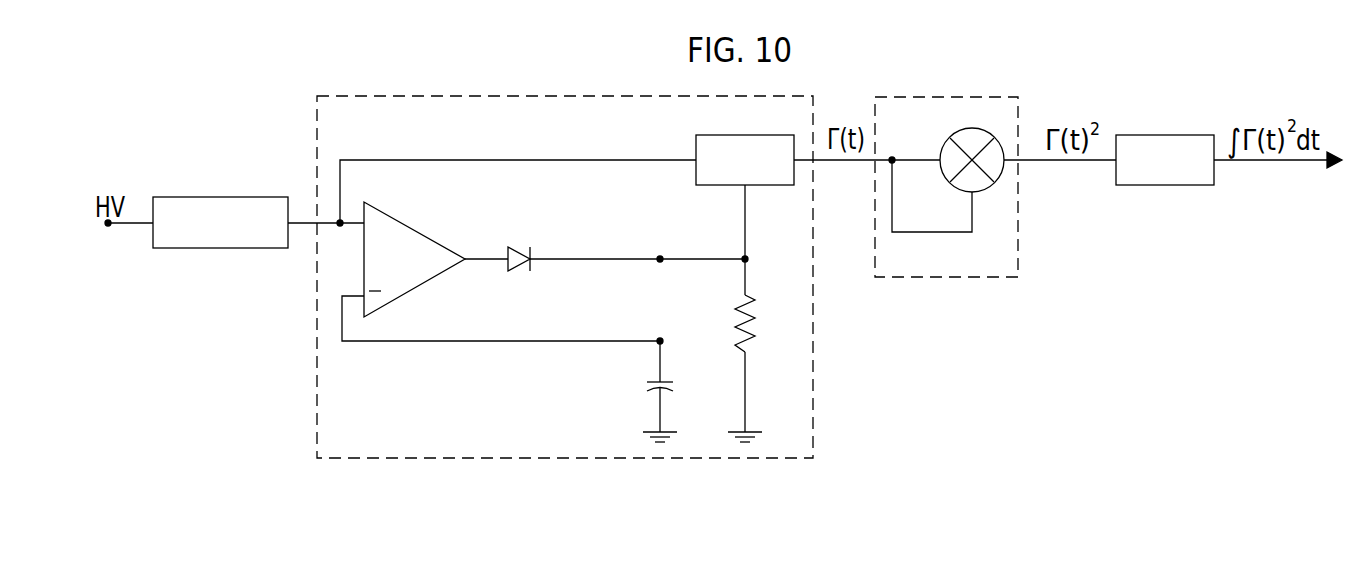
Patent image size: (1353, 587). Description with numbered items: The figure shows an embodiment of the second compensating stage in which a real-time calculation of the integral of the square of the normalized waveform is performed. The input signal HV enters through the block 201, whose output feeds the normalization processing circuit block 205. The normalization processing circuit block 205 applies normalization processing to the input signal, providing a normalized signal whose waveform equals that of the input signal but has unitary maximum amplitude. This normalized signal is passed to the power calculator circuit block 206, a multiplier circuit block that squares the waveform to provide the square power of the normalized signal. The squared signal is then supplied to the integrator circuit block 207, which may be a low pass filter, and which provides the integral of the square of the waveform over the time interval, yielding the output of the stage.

The attenuator / gain block K1 201 is at (219, 246).
The normalization processing circuit block 205 is at (340, 444).
The power calculator circuit block 206 is at (947, 278).
The integrator circuit block 207 is at (1166, 186).